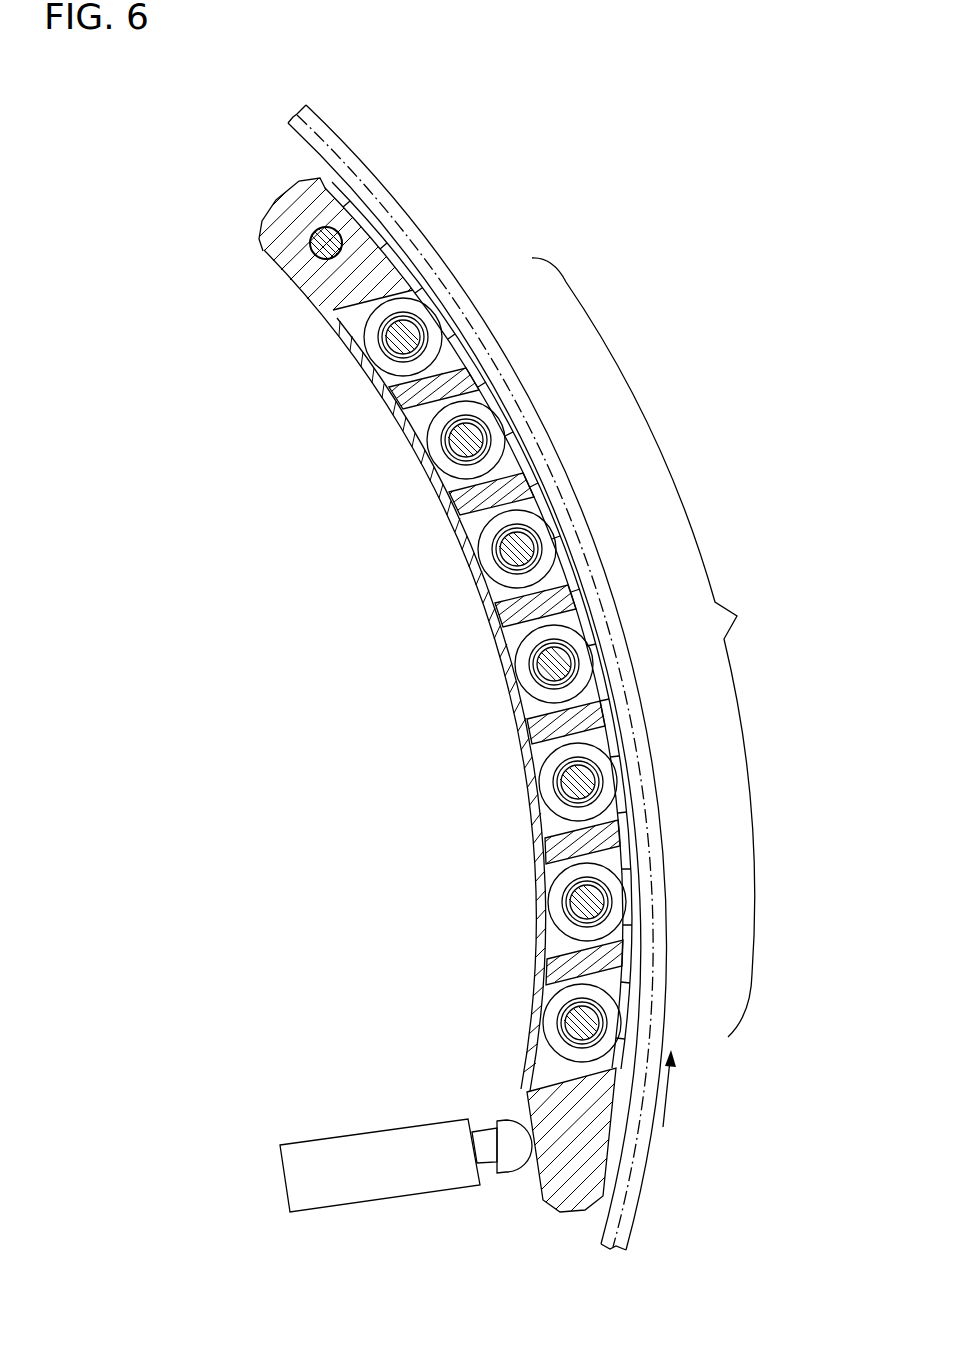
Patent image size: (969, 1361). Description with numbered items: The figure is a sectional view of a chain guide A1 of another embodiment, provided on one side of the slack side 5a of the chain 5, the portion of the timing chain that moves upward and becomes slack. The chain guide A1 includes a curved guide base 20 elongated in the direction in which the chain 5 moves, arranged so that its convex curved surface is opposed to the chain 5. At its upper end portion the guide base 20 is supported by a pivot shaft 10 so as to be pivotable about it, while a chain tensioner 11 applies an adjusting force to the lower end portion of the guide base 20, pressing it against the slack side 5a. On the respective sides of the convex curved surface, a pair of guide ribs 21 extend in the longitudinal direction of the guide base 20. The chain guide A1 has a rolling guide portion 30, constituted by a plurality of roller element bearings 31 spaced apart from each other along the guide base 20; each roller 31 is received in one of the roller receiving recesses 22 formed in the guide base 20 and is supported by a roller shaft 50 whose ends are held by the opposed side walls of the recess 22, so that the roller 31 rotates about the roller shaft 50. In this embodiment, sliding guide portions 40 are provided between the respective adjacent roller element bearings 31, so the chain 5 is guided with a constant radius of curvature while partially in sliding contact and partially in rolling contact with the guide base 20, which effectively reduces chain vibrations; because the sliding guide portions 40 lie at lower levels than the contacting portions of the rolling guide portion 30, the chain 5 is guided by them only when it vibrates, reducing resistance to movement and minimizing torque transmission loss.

The timing chain 5 is at (331, 123).
The slack side 5a is at (365, 183).
The pivot shaft 10 is at (313, 230).
The chain tensioner 11 is at (312, 1137).
The guide base 20 is at (292, 268).
The guide ribs 21 is at (380, 232).
The roller receiving recesses 22 is at (513, 637).
The rolling guide portion 30 is at (655, 647).
The rollers (roller element bearings) 31 is at (447, 463).
The sliding guide portion 40 is at (478, 378).
The roller shaft 50 is at (452, 436).
The chain guide A1 is at (256, 220).